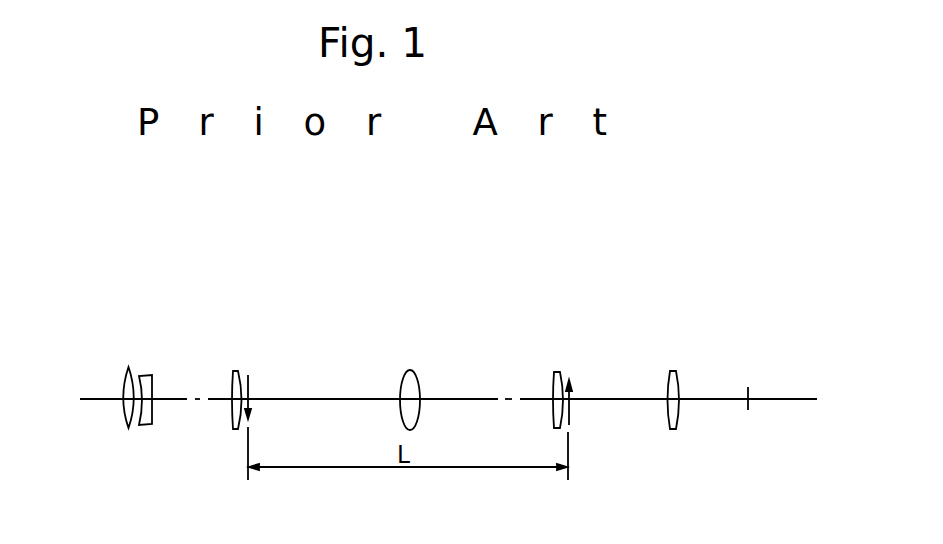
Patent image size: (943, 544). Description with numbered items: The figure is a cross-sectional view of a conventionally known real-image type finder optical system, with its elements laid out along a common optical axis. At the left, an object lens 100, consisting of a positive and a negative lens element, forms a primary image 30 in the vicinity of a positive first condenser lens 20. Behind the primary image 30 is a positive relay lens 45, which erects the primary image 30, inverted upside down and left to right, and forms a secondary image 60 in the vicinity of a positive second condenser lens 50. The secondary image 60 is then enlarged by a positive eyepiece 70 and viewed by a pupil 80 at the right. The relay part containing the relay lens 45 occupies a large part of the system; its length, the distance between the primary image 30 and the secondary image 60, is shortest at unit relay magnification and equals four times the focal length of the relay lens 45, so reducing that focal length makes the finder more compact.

The object lens 100 is at (160, 320).
The first condenser lens 20 is at (233, 390).
The primary image 30 is at (250, 385).
The relay lens 45 is at (405, 383).
The second condenser lens 50 is at (560, 372).
The secondary image 60 is at (571, 412).
The eyepiece 70 is at (668, 380).
The pupil 80 is at (750, 393).